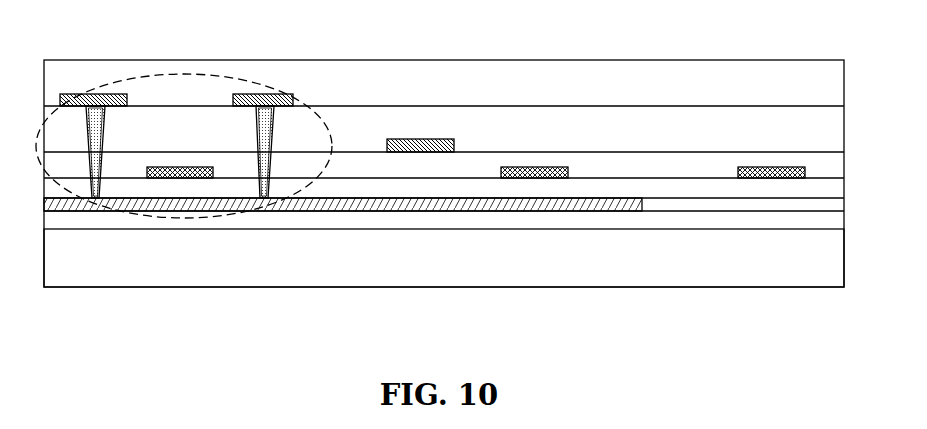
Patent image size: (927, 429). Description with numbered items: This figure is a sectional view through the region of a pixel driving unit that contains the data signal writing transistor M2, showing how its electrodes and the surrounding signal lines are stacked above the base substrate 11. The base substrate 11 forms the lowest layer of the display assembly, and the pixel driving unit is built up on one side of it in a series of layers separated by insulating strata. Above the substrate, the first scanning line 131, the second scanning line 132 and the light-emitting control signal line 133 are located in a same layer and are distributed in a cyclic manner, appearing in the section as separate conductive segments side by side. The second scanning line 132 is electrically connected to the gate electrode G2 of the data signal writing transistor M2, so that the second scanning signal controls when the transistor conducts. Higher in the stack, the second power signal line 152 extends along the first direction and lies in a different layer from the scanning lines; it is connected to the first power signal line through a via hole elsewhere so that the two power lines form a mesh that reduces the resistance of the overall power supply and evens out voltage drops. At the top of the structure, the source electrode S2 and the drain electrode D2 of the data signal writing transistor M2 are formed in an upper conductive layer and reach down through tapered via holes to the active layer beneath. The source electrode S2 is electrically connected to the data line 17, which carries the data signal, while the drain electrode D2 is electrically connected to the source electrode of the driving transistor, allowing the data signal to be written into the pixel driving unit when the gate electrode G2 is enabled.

The base substrate 11 is at (844, 258).
The data signal writing transistor M2 is at (225, 215).
The data line 17 is at (93, 113).
The source electrode of the data signal writing transistor S2 is at (88, 96).
The drain electrode of the data signal writing transistor D2 is at (258, 96).
The second scanning line 132 is at (183, 103).
The gate electrode of the data signal writing transistor G2 is at (182, 170).
The second power signal line 152 is at (420, 138).
The light-emitting control signal line 133 is at (533, 167).
The first scanning line 131 is at (768, 167).